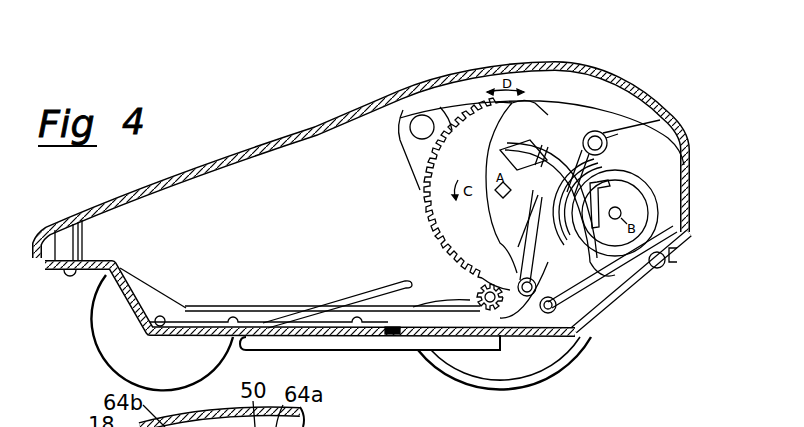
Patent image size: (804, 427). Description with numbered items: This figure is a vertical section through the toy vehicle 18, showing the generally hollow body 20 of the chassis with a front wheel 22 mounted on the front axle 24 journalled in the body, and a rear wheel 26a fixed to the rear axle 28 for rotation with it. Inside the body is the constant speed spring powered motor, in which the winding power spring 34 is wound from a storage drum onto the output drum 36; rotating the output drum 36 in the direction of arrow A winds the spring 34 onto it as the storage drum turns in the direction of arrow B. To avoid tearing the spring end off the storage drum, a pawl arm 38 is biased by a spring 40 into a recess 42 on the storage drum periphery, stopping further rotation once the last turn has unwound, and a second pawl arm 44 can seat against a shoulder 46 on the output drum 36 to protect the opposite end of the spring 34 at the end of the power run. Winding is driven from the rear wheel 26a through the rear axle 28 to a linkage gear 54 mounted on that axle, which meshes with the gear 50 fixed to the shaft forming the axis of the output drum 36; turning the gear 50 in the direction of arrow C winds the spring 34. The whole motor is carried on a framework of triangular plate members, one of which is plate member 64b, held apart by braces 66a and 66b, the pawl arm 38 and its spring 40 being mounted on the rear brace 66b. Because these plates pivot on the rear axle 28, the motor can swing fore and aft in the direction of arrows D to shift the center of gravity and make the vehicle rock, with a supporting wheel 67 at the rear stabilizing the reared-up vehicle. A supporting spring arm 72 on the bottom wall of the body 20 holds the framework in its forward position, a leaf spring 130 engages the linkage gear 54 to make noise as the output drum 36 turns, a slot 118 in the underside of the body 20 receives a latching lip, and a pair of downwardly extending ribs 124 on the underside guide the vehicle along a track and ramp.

The toy vehicle 18 is at (236, 143).
The body 20 is at (312, 133).
The front wheels 22 is at (91, 323).
The front axle 24 is at (163, 316).
The rear wheel 26a is at (540, 375).
The rear axle 28 is at (500, 318).
The winding power spring 34 is at (572, 143).
The output drum 36 is at (513, 147).
The pawl arm 38 is at (608, 133).
The spring 40 is at (605, 134).
The recess 42 is at (593, 200).
The second pawl arm 44 is at (572, 312).
The shoulder 46 is at (543, 248).
The gear 50 is at (426, 191).
The linkage gear 54 is at (484, 310).
The brace 66a is at (420, 116).
The rear brace 66b is at (612, 132).
The supporting wheel 67 is at (665, 264).
The supporting spring arm 72 is at (373, 287).
The slot 118 is at (397, 340).
The ribs 124 is at (342, 347).
The leaf spring 130 is at (421, 305).
The plate member 64b is at (542, 145).